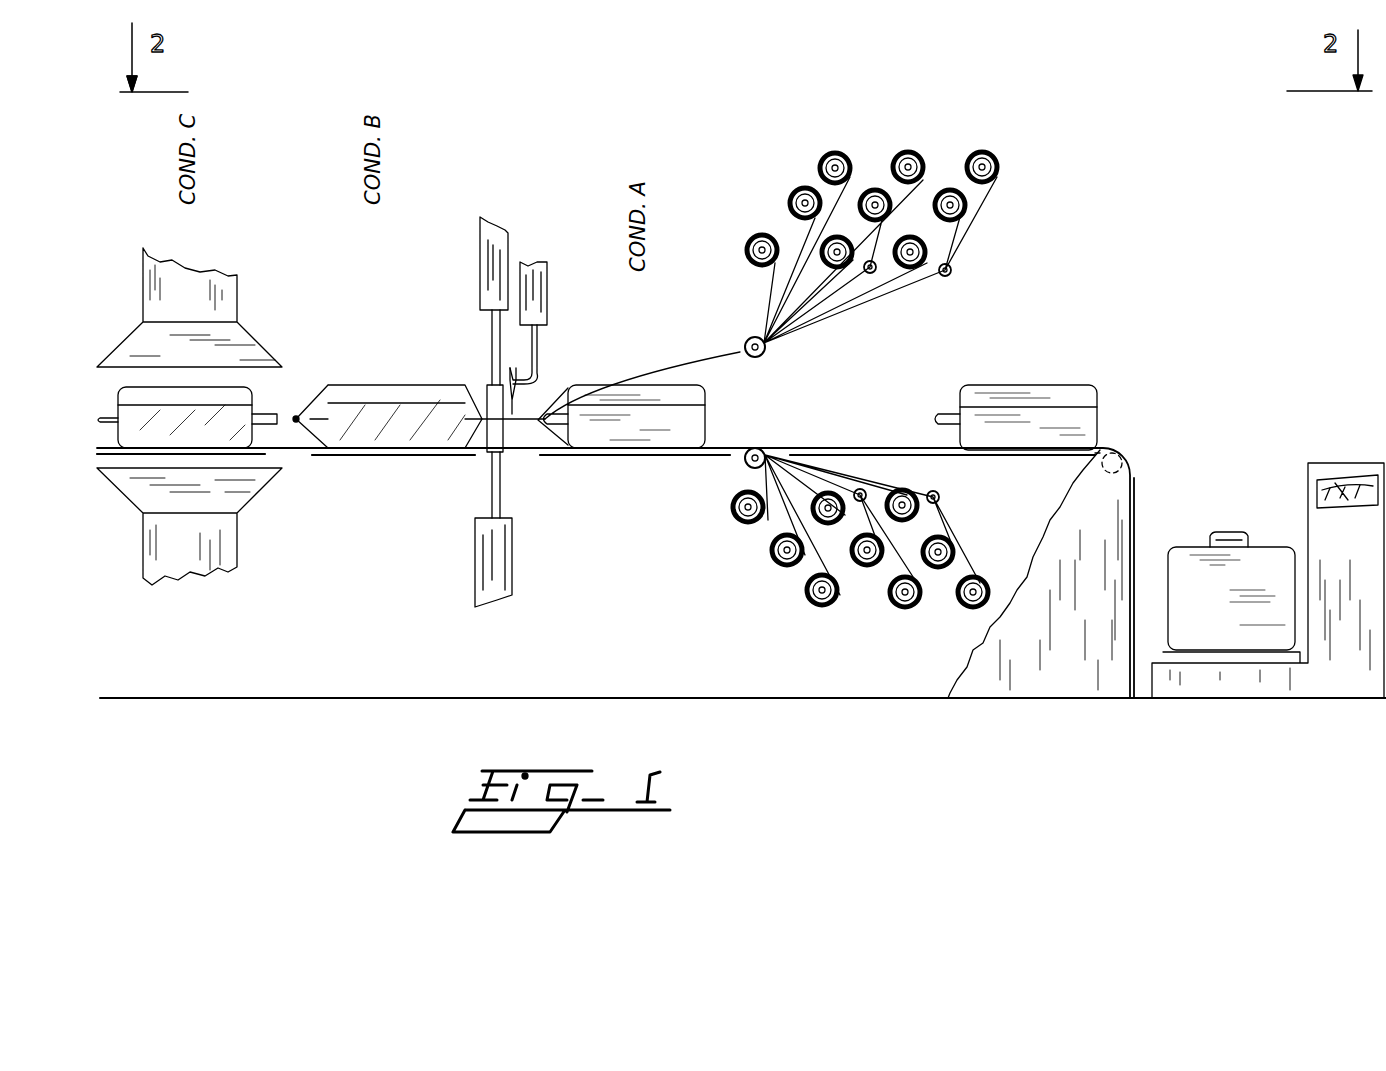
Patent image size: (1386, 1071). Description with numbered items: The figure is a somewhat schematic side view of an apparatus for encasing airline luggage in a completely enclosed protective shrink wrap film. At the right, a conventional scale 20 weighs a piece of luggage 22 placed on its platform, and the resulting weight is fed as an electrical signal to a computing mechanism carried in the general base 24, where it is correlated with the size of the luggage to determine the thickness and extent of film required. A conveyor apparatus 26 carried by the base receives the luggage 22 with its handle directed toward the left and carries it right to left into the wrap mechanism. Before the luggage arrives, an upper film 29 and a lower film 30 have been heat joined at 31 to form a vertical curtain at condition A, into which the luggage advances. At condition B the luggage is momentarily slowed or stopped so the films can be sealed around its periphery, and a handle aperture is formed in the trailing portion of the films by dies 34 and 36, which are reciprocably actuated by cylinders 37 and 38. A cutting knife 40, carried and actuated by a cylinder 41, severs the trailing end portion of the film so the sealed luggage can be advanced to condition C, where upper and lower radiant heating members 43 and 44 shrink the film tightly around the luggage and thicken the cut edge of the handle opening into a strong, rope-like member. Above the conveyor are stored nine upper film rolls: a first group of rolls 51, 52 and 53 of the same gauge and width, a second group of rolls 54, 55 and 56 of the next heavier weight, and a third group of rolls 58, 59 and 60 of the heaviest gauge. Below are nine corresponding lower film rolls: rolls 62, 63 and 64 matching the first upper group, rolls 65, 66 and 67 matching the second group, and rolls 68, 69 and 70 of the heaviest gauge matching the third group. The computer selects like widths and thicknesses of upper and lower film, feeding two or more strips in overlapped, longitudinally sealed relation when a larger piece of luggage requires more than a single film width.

The scale 20 is at (1308, 535).
The luggage 22 is at (1030, 388).
The base 24 is at (1010, 688).
The conveyor apparatus 26 is at (1027, 452).
The upper film 29 is at (722, 363).
The lower film 30 is at (760, 440).
The heat joint 31 is at (297, 417).
The die 34 is at (488, 395).
The die 36 is at (503, 452).
The cylinder 37 is at (480, 267).
The cylinder 38 is at (505, 553).
The cutting knife 40 is at (523, 385).
The cylinder 41 is at (547, 305).
The upper radiant heating member 43 is at (238, 332).
The lower radiant heating member 44 is at (225, 545).
The upper film roll 51 is at (750, 233).
The upper film roll 52 is at (796, 188).
The upper film roll 53 is at (831, 150).
The upper film roll 54 is at (833, 238).
The upper film roll 55 is at (877, 188).
The upper film roll 56 is at (913, 150).
The upper film roll 58 is at (916, 268).
The upper film roll 59 is at (968, 205).
The upper film roll 60 is at (998, 160).
The lower film roll 62 is at (733, 500).
The lower film roll 63 is at (768, 550).
The lower film roll 64 is at (803, 592).
The lower film roll 65 is at (835, 523).
The lower film roll 66 is at (872, 573).
The lower film roll 67 is at (905, 613).
The lower film roll 68 is at (916, 500).
The lower film roll 69 is at (952, 560).
The lower film roll 70 is at (976, 590).